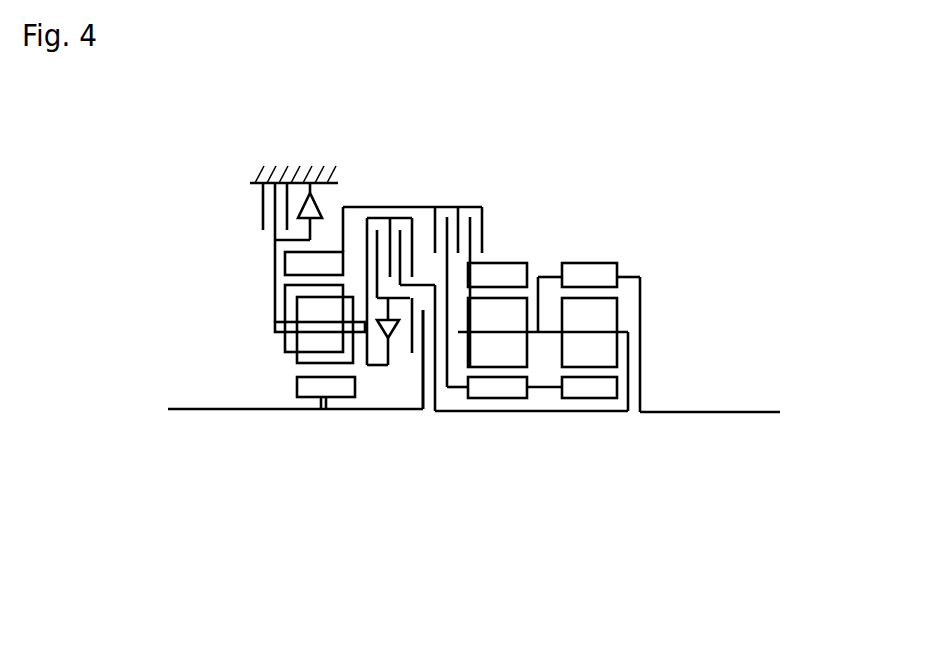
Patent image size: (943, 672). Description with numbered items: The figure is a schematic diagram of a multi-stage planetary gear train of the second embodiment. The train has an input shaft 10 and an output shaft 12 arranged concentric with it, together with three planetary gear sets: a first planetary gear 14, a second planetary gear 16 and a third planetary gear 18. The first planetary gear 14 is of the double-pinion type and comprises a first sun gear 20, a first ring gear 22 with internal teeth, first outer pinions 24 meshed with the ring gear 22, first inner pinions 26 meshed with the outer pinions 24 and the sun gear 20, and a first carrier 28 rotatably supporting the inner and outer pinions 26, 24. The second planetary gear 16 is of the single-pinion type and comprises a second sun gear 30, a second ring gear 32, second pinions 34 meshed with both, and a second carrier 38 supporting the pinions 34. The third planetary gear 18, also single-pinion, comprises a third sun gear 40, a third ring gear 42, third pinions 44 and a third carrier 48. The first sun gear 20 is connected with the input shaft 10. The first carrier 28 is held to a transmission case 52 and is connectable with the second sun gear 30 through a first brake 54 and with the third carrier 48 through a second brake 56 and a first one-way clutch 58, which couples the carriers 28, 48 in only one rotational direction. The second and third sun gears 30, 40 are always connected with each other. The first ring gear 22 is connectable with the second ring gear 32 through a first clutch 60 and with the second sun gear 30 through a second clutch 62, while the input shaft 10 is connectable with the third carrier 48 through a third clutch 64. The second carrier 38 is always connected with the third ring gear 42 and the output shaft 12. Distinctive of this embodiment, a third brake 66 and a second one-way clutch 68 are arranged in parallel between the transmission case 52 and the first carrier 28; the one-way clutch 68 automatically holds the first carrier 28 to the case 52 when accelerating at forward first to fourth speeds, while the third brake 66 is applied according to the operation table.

The input shaft 10 is at (207, 408).
The output shaft 12 is at (736, 411).
The first planetary gear 14 is at (285, 421).
The second planetary gear 16 is at (520, 424).
The third planetary gear 18 is at (620, 422).
The first sun gear 20 is at (320, 390).
The first ring gear 22 is at (303, 265).
The first outer pinions 24 is at (293, 307).
The first inner pinions 26 is at (303, 360).
The first carrier 28 is at (277, 327).
The second sun gear 30 is at (495, 413).
The second ring gear 32 is at (507, 273).
The second pinions 34 is at (515, 313).
The second carrier 38 is at (532, 333).
The third sun gear 40 is at (603, 388).
The third ring gear 42 is at (603, 273).
The third pinions 44 is at (613, 317).
The third carrier 48 is at (622, 332).
The transmission case 52 is at (283, 183).
The first brake 54 is at (407, 228).
The second brake 56 is at (382, 232).
The first one-way clutch 58 is at (397, 340).
The first clutch 60 is at (473, 222).
The second clutch 62 is at (437, 222).
The third clutch 64 is at (429, 325).
The third brake 66 is at (267, 193).
The second one-way clutch 68 is at (297, 197).